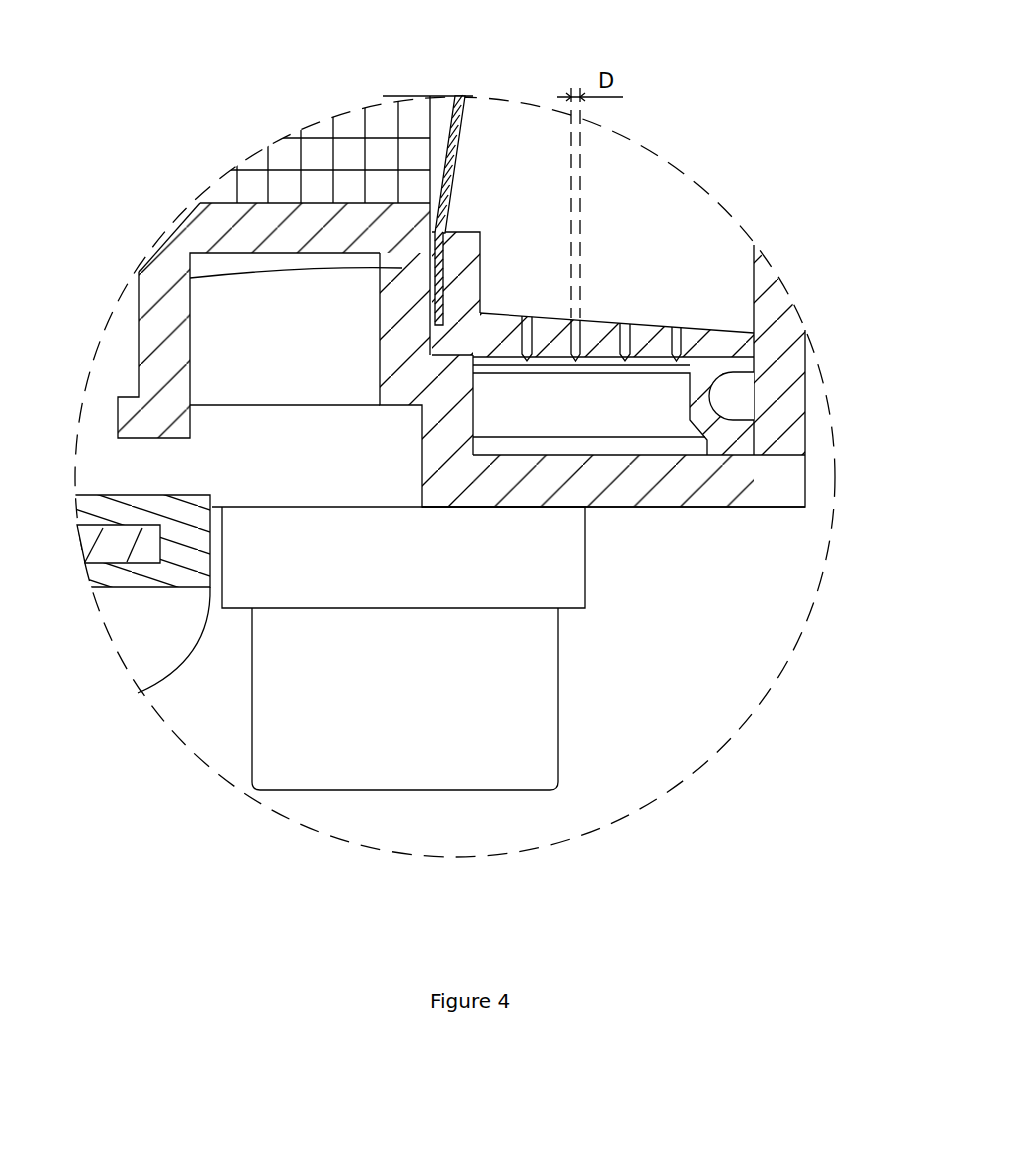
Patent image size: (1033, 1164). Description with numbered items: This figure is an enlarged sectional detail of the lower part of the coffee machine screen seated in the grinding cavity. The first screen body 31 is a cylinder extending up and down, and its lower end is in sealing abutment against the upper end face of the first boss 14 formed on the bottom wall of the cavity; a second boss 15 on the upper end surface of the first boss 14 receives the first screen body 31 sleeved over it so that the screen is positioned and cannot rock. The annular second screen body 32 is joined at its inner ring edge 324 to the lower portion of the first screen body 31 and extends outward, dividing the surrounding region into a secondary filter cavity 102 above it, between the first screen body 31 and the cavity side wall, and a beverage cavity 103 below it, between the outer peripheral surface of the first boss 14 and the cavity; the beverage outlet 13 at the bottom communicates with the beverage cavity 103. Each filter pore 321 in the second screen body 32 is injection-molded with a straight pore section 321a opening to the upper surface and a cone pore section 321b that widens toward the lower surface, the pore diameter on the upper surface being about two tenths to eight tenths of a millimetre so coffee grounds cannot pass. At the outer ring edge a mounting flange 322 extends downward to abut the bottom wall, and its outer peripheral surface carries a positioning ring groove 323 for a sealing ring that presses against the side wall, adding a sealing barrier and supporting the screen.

The beverage outlet 13 is at (433, 793).
The first boss 14 is at (452, 423).
The second boss 15 is at (138, 393).
The first screen body 31 is at (453, 142).
The second screen body 32 is at (645, 521).
The secondary filter cavity 102 is at (645, 203).
The beverage cavity 103 is at (562, 420).
The filter pore 321 is at (683, 265).
The straight pore section 321a is at (645, 327).
The cone pore section 321b is at (757, 265).
The mounting flange 322 is at (788, 477).
The positioning ring groove 323 is at (733, 398).
The inner ring edge 324 is at (445, 272).